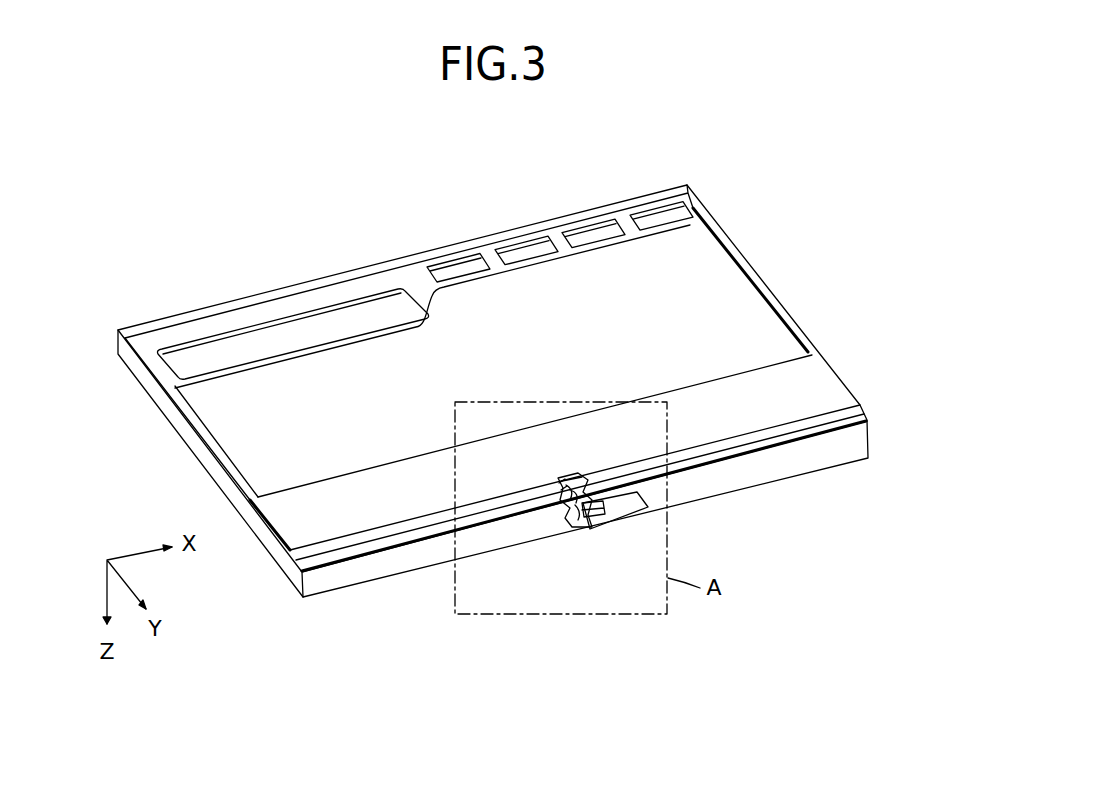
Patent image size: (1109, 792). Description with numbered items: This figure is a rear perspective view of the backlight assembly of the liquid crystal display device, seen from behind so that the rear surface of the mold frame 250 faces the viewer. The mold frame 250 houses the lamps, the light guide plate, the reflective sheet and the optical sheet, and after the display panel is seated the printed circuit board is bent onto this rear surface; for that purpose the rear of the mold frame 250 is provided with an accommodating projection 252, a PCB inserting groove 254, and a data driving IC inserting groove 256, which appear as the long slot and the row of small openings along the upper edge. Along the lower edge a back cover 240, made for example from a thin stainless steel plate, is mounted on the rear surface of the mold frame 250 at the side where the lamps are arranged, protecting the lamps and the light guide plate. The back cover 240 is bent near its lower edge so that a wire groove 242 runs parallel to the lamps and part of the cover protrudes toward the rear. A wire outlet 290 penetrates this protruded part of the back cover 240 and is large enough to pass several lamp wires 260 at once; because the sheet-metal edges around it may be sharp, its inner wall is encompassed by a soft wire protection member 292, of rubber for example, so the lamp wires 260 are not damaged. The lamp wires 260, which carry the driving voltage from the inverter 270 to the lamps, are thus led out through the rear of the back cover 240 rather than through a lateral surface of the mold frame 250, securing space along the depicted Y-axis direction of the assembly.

The mold frame 250 is at (740, 269).
The accommodating projection 252 is at (378, 265).
The PCB inserting groove 254 is at (467, 312).
The data driving IC inserting groove 256 is at (525, 247).
The back cover 240 is at (822, 382).
The wire groove 242 is at (777, 433).
The wire outlet 290 is at (577, 478).
The wire protection member 292 is at (558, 475).
The lamp wires 260 is at (568, 522).
The inverter 270 is at (600, 512).